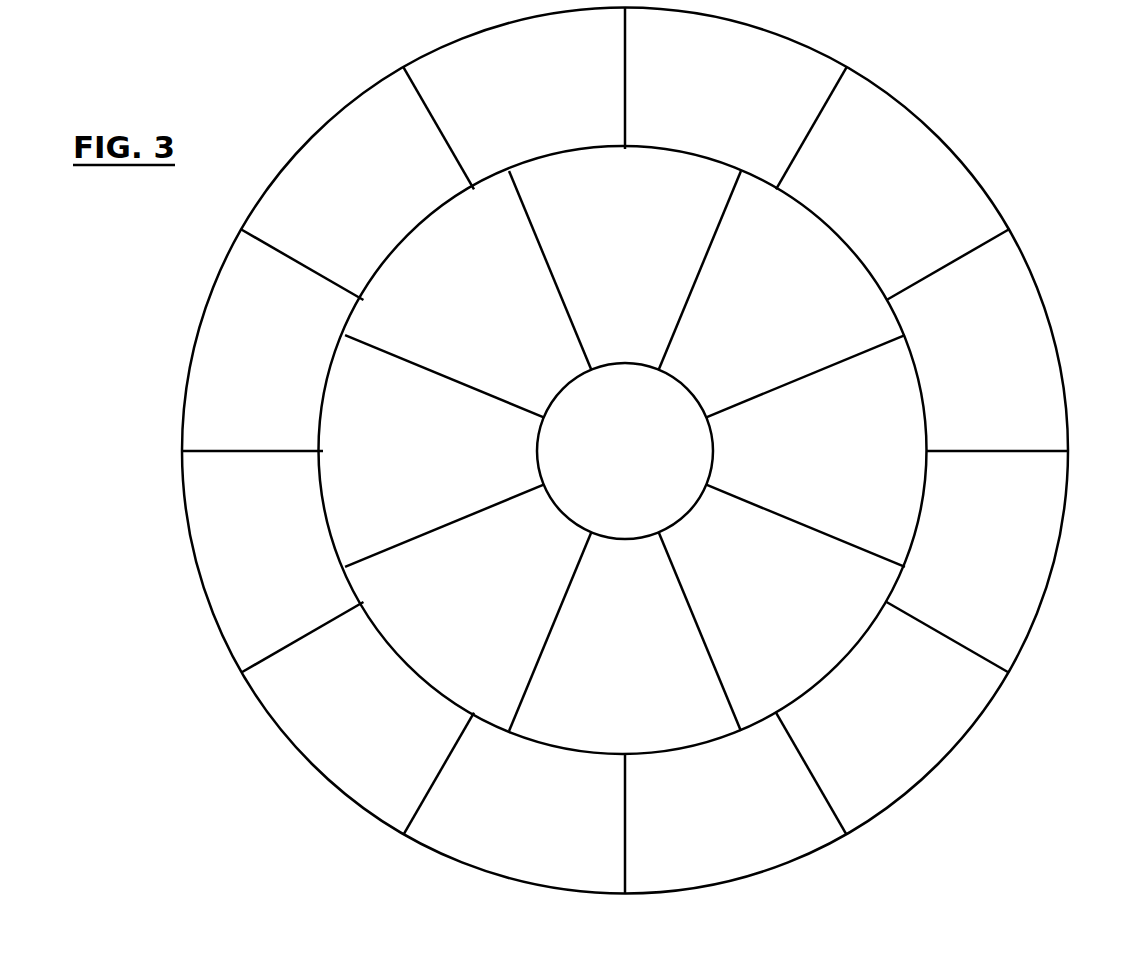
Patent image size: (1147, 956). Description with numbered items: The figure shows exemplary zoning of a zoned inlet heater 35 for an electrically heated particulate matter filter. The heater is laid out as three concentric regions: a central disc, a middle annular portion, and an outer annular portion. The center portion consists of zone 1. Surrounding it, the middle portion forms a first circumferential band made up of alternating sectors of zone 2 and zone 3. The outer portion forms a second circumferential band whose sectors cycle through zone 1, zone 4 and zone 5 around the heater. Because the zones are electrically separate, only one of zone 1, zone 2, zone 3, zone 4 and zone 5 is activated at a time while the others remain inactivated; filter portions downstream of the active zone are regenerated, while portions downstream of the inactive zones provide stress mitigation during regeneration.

The zoned inlet heater 35 is at (1046, 160).
The zone 1 is at (622, 443).
The zone 2 is at (625, 395).
The zone 3 is at (625, 478).
The zone 4 is at (623, 448).
The zone 5 is at (632, 448).